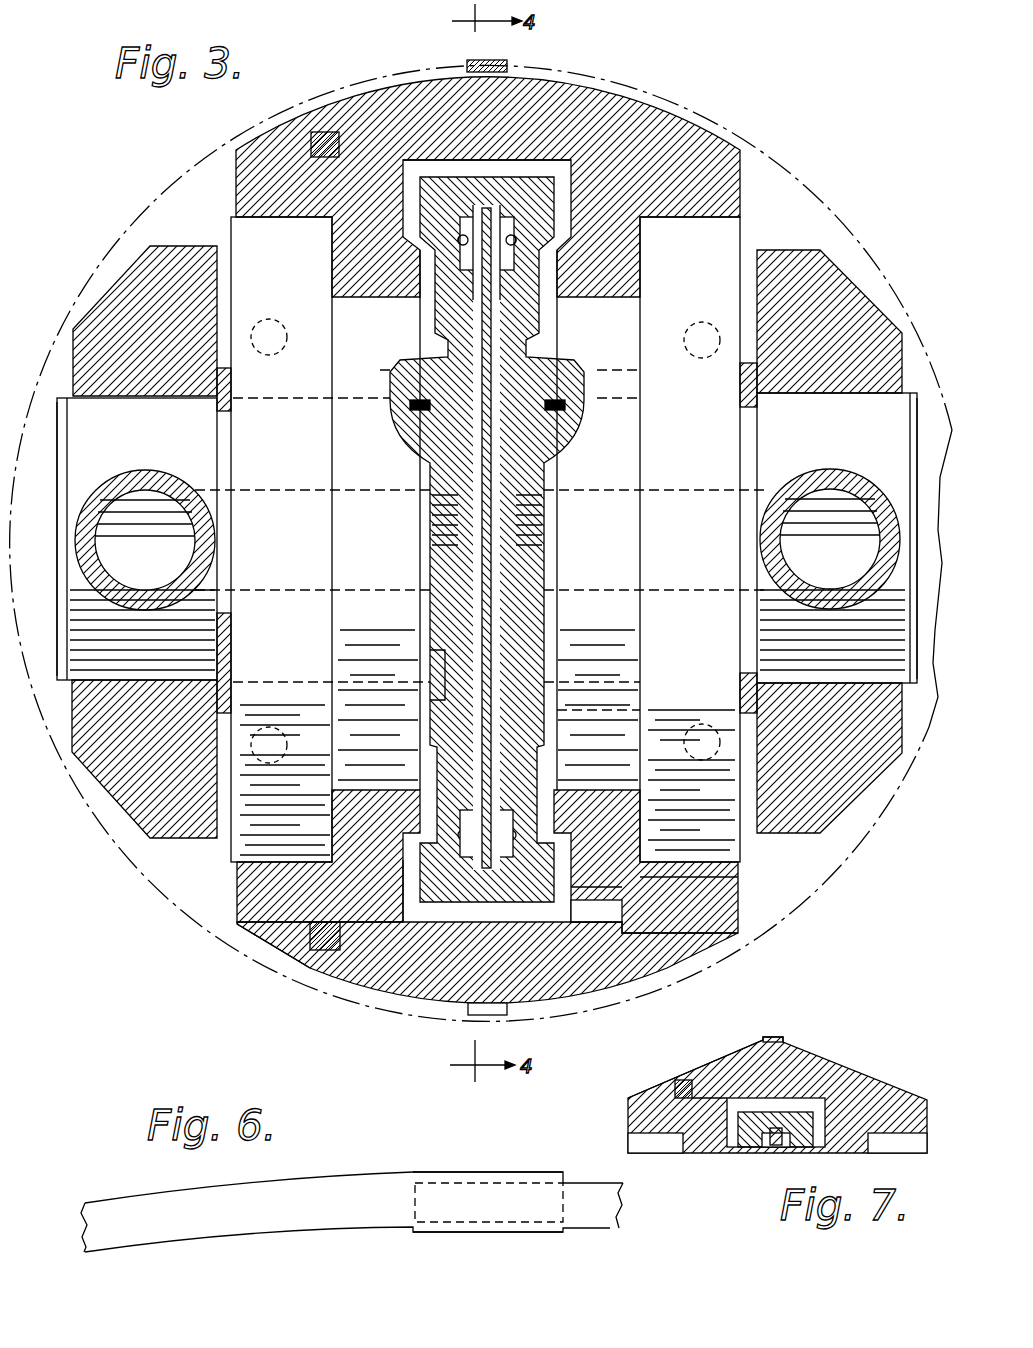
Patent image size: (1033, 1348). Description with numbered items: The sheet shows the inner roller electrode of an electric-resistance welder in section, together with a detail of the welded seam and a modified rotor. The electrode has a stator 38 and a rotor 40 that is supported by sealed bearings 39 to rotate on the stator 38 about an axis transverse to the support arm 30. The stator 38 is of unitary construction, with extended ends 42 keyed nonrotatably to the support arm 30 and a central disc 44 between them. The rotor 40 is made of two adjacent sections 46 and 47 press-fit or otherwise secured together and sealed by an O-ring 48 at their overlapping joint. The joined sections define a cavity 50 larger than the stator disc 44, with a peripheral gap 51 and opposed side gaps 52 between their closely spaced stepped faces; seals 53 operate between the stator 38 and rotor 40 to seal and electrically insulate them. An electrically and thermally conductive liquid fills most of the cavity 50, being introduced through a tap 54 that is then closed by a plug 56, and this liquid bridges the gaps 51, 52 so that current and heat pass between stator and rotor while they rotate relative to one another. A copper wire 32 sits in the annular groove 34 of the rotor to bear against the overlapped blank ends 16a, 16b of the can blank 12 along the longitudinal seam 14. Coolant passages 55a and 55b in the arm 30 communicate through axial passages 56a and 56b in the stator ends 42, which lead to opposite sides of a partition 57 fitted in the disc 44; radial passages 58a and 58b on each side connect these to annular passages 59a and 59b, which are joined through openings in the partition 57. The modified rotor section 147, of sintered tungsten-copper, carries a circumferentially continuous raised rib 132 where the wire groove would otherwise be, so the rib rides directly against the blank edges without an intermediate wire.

In FIG. 6, the can blank 12 is at (233, 1230).
In FIG. 6, the longitudinal seam 14 is at (460, 1170).
In FIG. 6, the blank end 16a is at (587, 1230).
In FIG. 6, the blank end 16b is at (530, 1170).
In FIG. 3, the support arm 30 is at (180, 487).
In FIG. 3, the copper wire 32 is at (475, 61).
In FIG. 3, the annular groove 34 is at (473, 1013).
In FIG. 3, the stator 38 is at (62, 382).
In FIG. 3, the sealed bearings 39 is at (745, 247).
In FIG. 7, the sealed bearings 39 is at (662, 1150).
In FIG. 3, the rotor 40 is at (341, 104).
In FIG. 3, the extended ends 42 is at (73, 657).
In FIG. 3, the central disc 44 is at (523, 737).
In FIG. 7, the central disc 44 is at (743, 1148).
In FIG. 3, the rotor section 46 is at (236, 920).
In FIG. 7, the rotor section 46 is at (650, 1088).
In FIG. 3, the rotor section 47 is at (357, 977).
In FIG. 3, the O-ring 48 is at (310, 943).
In FIG. 7, the O-ring 48 is at (683, 1080).
In FIG. 3, the cavity 50 is at (427, 912).
In FIG. 3, the peripheral gap 51 is at (520, 167).
In FIG. 3, the side gaps 52 is at (590, 200).
In FIG. 3, the seals 53 is at (388, 471).
In FIG. 3, the tap 54 is at (595, 913).
In FIG. 3, the coolant passage 55a is at (138, 498).
In FIG. 3, the coolant passage 55b is at (840, 507).
In FIG. 3, the plug 56 is at (693, 923).
In FIG. 3, the axial passage 56a is at (277, 492).
In FIG. 3, the axial passage 56b is at (706, 498).
In FIG. 3, the partition 57 is at (483, 307).
In FIG. 3, the radial passages 58a is at (478, 662).
In FIG. 3, the radial passages 58b is at (490, 345).
In FIG. 3, the annular passage 59a is at (454, 200).
In FIG. 3, the annular passage 59b is at (563, 200).
In FIG. 7, the raised rib 132 is at (780, 1038).
In FIG. 7, the rotor section 147 is at (847, 1062).